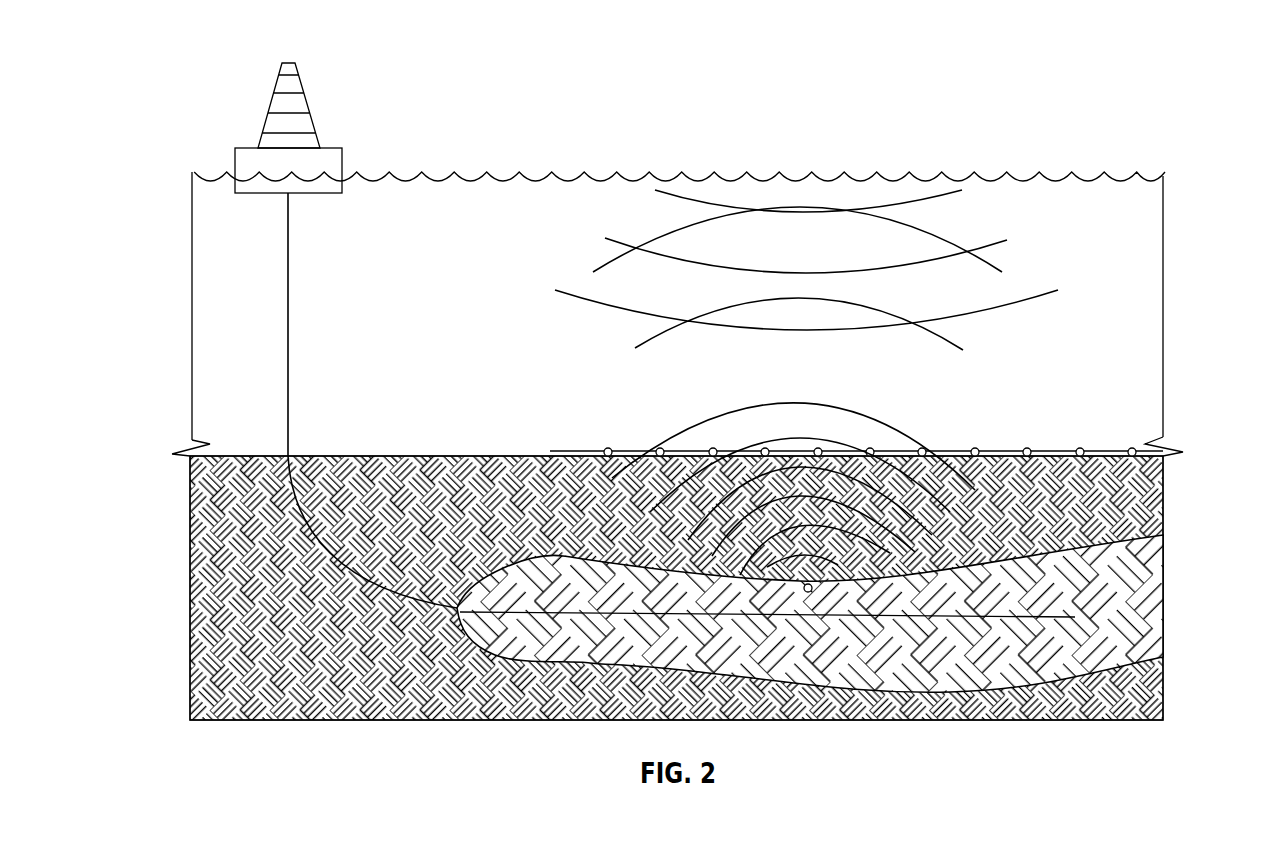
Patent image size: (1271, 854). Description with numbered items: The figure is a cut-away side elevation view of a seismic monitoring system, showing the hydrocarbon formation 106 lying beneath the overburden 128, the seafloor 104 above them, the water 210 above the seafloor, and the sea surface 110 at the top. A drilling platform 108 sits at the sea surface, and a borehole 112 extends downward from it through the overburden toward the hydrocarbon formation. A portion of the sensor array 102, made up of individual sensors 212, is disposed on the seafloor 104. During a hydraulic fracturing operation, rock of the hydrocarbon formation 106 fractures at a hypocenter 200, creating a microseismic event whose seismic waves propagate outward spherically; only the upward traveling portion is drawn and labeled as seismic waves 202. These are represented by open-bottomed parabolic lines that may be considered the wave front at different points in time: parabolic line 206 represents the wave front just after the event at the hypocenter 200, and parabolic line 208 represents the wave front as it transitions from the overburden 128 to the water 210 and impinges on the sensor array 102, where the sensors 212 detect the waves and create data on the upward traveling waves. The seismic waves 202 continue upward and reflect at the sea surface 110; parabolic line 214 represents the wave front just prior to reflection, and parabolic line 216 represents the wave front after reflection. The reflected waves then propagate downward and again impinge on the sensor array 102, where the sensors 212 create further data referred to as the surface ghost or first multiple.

The sensor array 102 is at (1080, 427).
The seafloor 104 is at (402, 456).
The hydrocarbon formation 106 is at (1148, 603).
The drilling platform 108 is at (248, 148).
The sea surface 110 is at (1137, 177).
The borehole 112 is at (375, 609).
The overburden 128 is at (1147, 508).
The hypocenter 200 is at (814, 592).
The seismic waves 202 is at (795, 382).
The parabolic line 206 is at (730, 590).
The parabolic line 208 is at (898, 413).
The water 210 is at (408, 290).
The sensors 212 is at (607, 450).
The parabolic line 214 is at (998, 264).
The parabolic line 216 is at (932, 200).